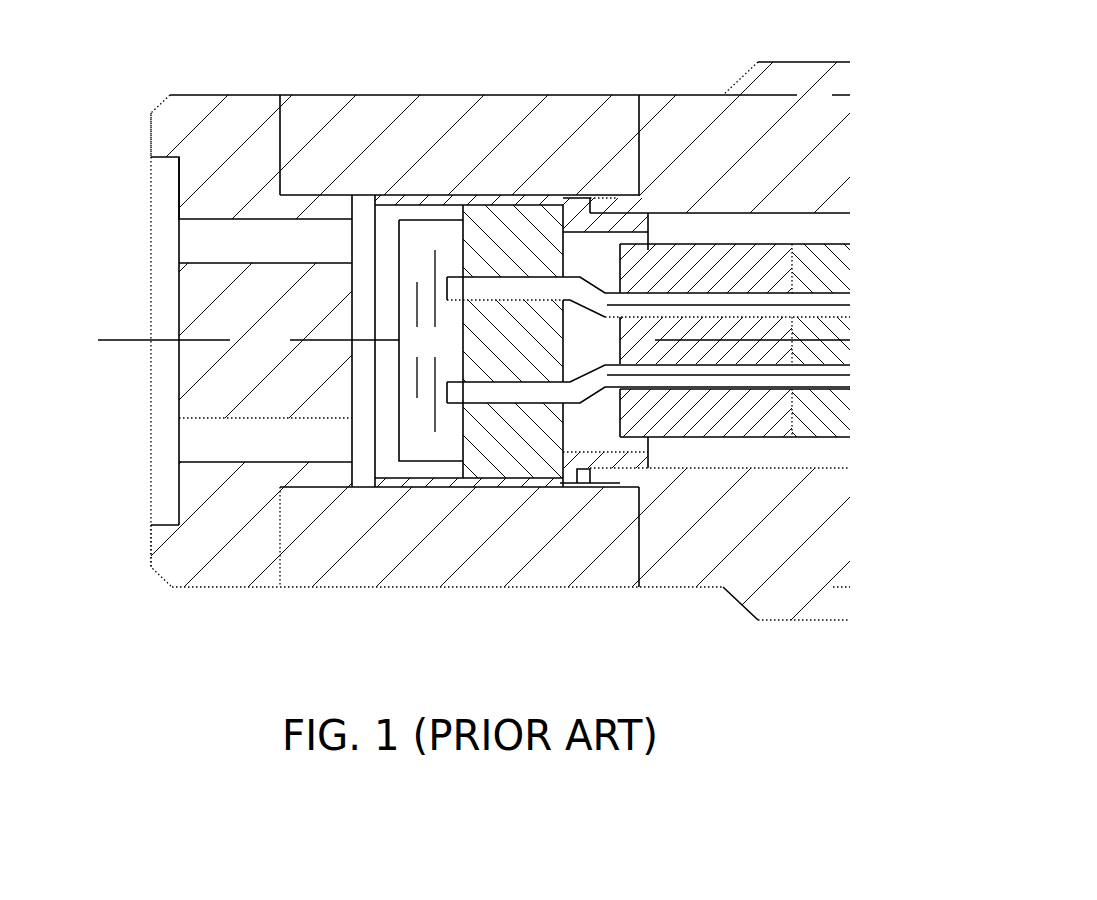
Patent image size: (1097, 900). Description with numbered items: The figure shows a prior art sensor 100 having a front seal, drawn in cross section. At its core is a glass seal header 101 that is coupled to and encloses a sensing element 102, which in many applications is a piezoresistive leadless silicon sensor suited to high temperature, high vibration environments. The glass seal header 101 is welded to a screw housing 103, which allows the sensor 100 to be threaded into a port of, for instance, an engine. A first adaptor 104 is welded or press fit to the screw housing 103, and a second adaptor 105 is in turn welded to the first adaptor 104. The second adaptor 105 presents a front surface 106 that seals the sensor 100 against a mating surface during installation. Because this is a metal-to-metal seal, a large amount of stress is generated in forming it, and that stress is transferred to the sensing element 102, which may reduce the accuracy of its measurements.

The prior art sensor 100 is at (490, 40).
The glass seal header 101 is at (583, 340).
The sensing element 102 is at (411, 350).
The screw housing 103 is at (746, 535).
The first adaptor 104 is at (438, 548).
The second adaptor 105 is at (245, 350).
The front surface 106 is at (128, 562).